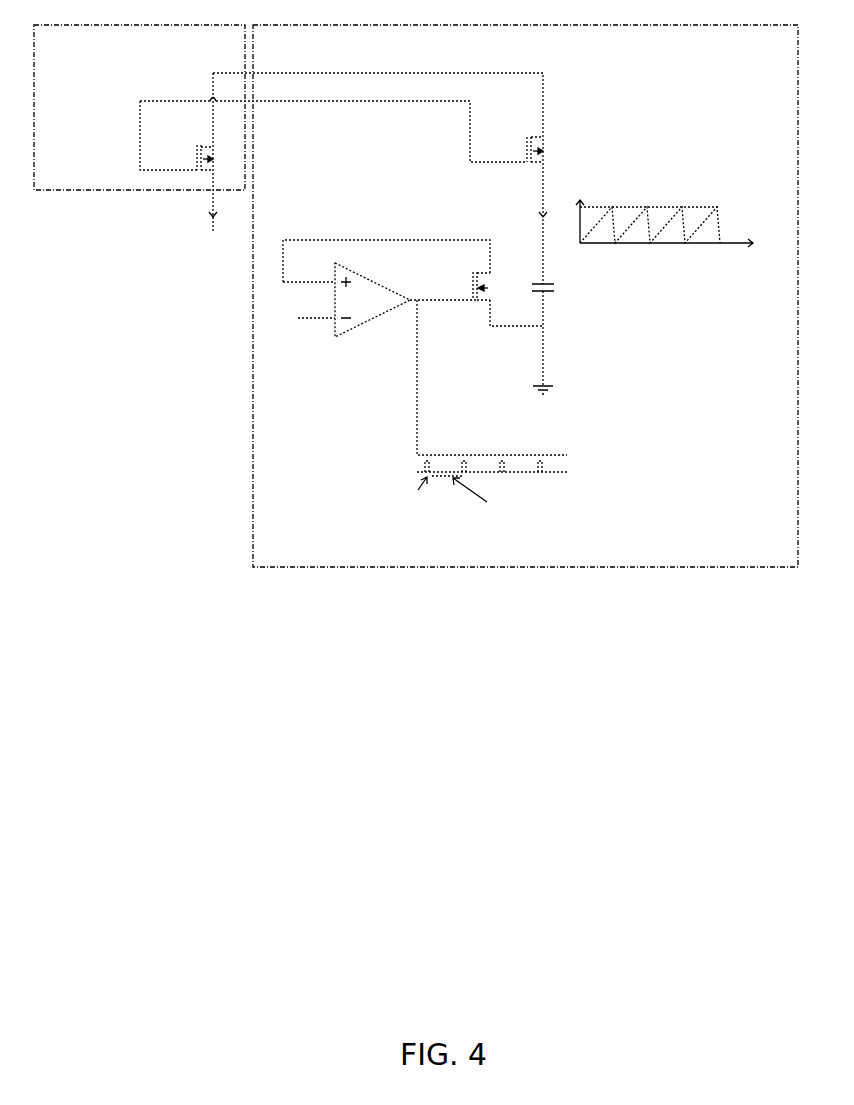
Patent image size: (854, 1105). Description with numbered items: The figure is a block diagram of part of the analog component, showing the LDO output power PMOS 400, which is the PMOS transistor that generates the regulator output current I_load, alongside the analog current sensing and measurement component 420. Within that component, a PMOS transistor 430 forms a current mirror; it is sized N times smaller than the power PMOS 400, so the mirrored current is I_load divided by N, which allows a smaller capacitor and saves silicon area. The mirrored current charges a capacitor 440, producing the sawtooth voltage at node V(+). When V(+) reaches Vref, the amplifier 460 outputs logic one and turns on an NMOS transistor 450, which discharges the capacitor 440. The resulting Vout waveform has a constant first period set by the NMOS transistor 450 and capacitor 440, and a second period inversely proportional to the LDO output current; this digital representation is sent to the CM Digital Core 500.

The LDO output power PMOS 400 is at (139, 129).
The analog current sensing and measurement component 420 is at (469, 296).
The PMOS transistor 430 is at (541, 138).
The capacitor 440 is at (550, 291).
The NMOS transistor 450 is at (472, 305).
The amplifier 460 is at (357, 327).
The CM Digital Core 500 is at (549, 469).